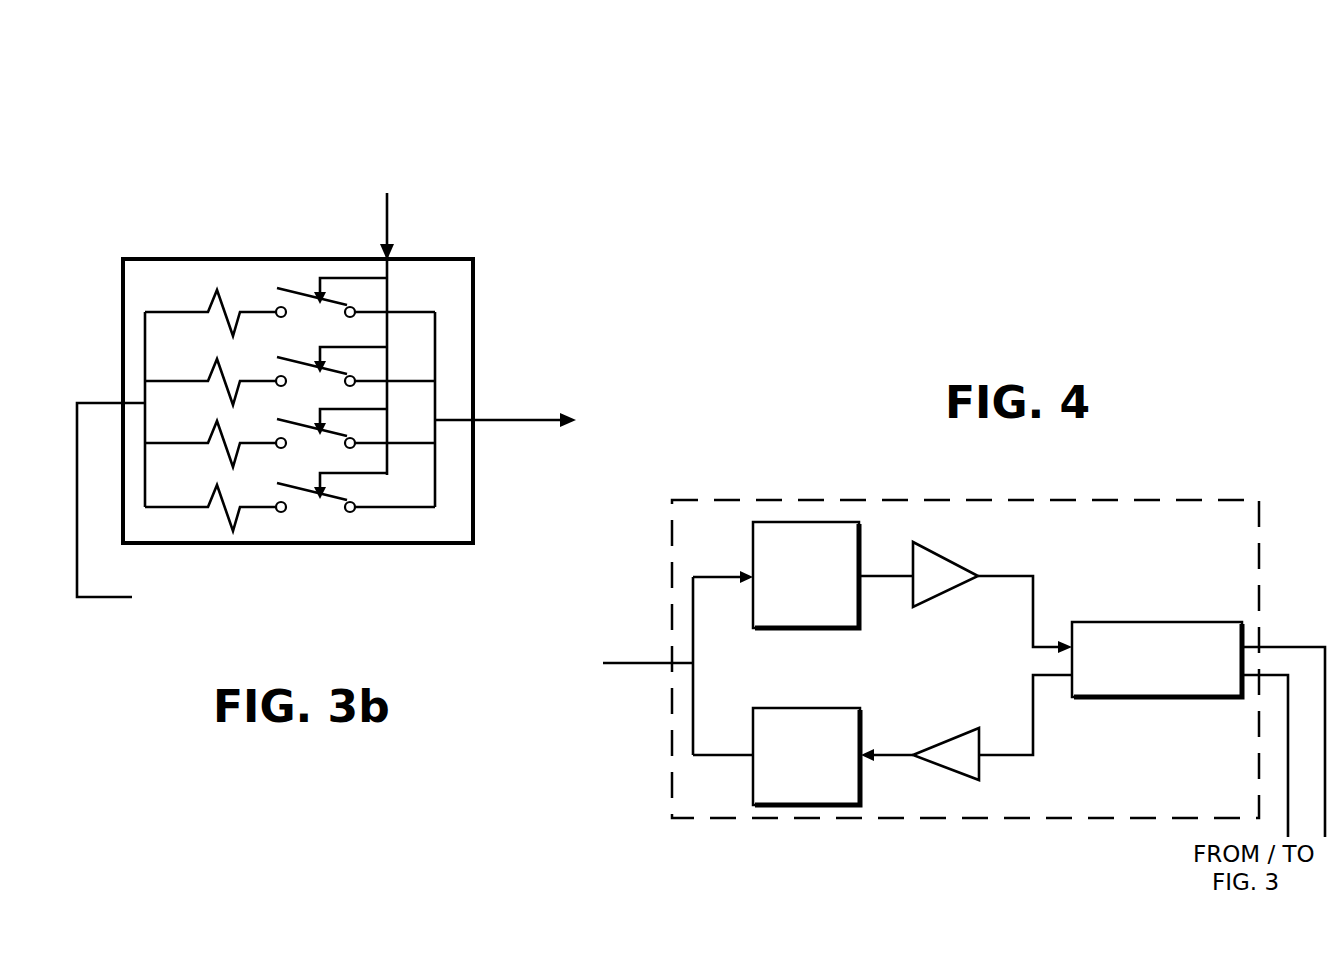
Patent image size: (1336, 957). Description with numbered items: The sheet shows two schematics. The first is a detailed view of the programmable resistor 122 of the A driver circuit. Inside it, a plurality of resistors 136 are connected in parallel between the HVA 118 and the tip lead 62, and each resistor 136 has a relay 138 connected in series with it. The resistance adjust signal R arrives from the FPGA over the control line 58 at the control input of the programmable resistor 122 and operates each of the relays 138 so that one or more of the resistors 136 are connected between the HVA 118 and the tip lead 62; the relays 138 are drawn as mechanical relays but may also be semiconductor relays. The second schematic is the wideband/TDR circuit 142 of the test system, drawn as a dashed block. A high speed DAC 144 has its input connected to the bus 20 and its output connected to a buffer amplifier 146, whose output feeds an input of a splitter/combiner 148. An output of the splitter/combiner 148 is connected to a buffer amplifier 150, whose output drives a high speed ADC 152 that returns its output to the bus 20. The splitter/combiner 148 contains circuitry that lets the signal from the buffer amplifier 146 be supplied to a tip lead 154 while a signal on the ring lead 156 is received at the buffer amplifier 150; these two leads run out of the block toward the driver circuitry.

In FIG. 3B, the programmable resistor 122 is at (473, 300).
In FIG. 3B, the resistors 136 is at (270, 618).
In FIG. 3B, the relays 138 is at (448, 572).
In FIG. 3B, the control line 58 is at (388, 229).
In FIG. 3B, the tip lead 62 is at (543, 444).
In FIG. 3B, the HVA 118 is at (139, 533).
In FIG. 4, the wideband/TDR circuit 142 is at (1088, 500).
In FIG. 4, the bus 20 is at (660, 664).
In FIG. 4, the high speed DAC 144 is at (858, 532).
In FIG. 4, the buffer amplifier 146 is at (955, 570).
In FIG. 4, the splitter/combiner 148 is at (1190, 622).
In FIG. 4, the buffer amplifier 150 is at (962, 770).
In FIG. 4, the high speed ADC 152 is at (752, 782).
In FIG. 4, the tip lead 154 is at (1306, 647).
In FIG. 4, the ring lead 156 is at (1288, 752).